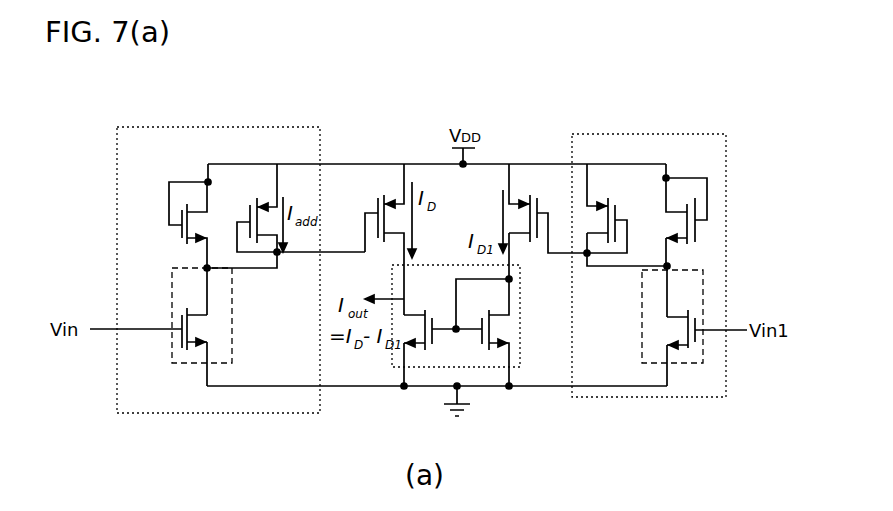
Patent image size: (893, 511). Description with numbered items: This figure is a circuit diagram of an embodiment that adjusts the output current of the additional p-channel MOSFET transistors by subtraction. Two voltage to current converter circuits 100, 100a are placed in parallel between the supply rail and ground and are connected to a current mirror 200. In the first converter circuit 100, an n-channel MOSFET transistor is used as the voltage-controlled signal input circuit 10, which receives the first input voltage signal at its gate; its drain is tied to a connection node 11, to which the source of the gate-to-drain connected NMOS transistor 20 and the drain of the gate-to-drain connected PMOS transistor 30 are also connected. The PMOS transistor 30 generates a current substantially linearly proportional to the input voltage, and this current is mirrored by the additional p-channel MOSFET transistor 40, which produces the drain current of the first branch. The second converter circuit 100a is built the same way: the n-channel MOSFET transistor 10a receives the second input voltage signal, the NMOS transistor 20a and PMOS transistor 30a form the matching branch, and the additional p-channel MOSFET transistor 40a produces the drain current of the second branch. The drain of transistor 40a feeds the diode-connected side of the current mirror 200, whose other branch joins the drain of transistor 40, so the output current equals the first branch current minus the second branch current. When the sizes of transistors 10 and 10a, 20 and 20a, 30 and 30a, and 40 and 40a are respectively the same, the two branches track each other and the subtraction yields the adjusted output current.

The voltage-current converter circuit 100 is at (220, 125).
The voltage to current converter circuit 100a is at (652, 133).
The voltage-controlled signal input circuit 10 is at (197, 353).
The n-channel MOSFET transistor 10a is at (677, 310).
The connection node 11 is at (205, 267).
The NMOS transistor 20 is at (197, 210).
The NMOS transistor 20a is at (678, 197).
The PMOS transistor 30 is at (266, 196).
The PMOS transistor 30a is at (600, 200).
The additional p-channel MOSFET transistor 40 is at (392, 192).
The additional p-channel MOSFET transistor 40a is at (522, 190).
The current mirror 200 is at (520, 358).